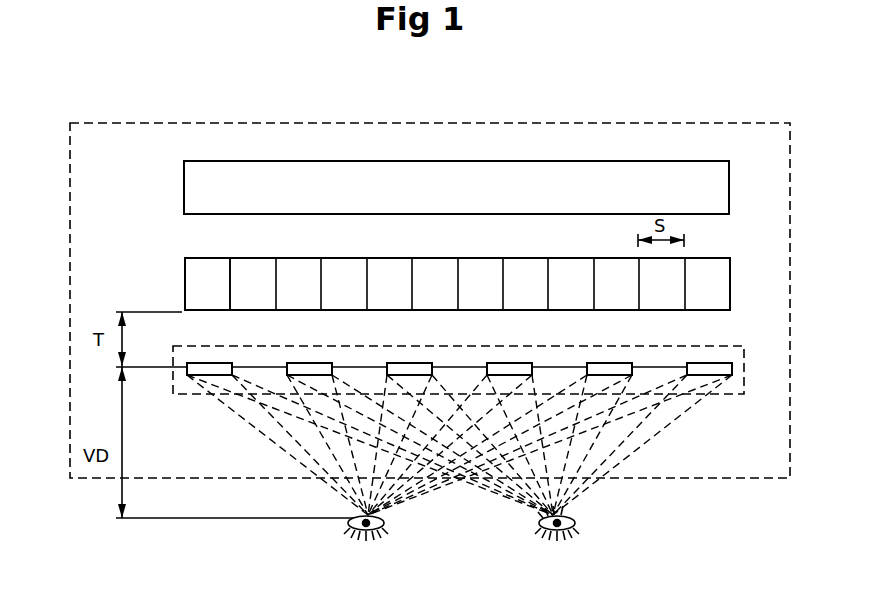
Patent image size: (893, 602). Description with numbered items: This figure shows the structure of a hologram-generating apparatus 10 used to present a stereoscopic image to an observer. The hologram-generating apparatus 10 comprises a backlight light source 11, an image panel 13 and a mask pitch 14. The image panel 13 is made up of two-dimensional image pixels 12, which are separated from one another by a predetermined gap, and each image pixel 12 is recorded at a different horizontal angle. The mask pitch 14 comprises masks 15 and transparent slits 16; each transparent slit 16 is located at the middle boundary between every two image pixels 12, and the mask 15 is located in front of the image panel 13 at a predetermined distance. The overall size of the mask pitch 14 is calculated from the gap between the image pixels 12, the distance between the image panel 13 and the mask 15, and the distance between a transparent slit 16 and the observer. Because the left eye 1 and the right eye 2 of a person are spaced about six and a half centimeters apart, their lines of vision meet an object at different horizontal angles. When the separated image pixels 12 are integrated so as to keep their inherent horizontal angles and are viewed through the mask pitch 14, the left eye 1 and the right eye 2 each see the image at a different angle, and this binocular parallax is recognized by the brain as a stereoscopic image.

The left eye 1 is at (345, 524).
The right eye 2 is at (578, 527).
The hologram-generating apparatus 10 is at (598, 122).
The backlight light source 11 is at (648, 160).
The two-dimensional image pixels 12 is at (734, 266).
The image panel 13 is at (190, 258).
The mask pitch 14 is at (703, 345).
The mask 15 is at (720, 376).
The transparent slit 16 is at (645, 369).